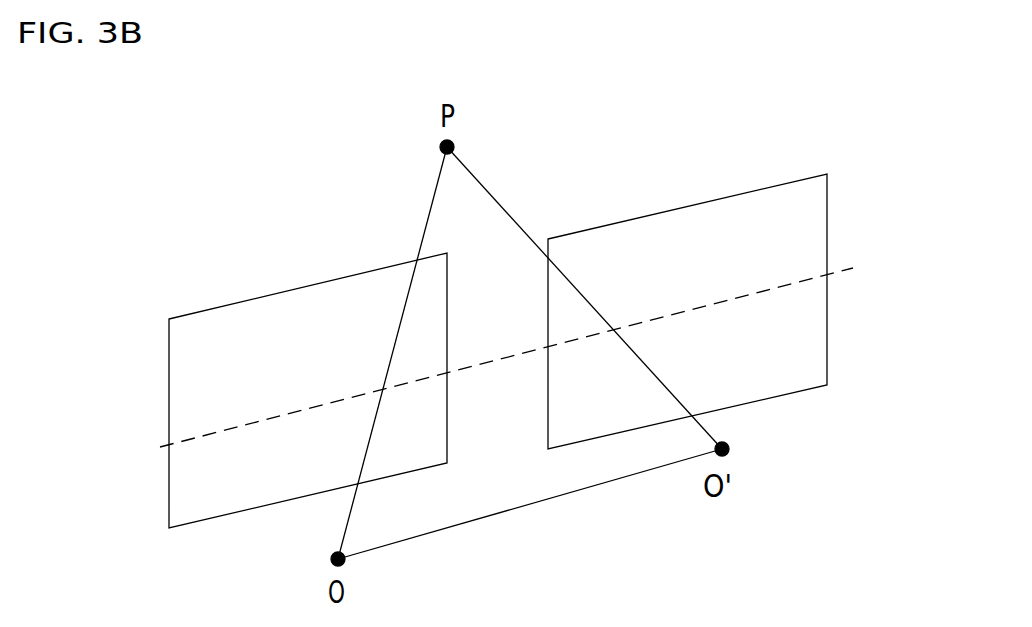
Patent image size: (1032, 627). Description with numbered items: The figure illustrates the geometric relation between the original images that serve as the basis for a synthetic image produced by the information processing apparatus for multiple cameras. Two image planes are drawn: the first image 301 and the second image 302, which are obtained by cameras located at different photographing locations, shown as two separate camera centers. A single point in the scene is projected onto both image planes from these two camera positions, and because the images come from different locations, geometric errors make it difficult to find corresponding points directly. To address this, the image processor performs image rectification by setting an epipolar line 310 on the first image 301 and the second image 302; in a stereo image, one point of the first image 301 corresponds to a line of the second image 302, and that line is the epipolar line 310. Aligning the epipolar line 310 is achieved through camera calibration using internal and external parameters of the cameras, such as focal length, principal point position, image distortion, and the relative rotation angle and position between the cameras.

The first image 301 is at (169, 362).
The second image 302 is at (827, 221).
The epipolar line 310 is at (152, 447).